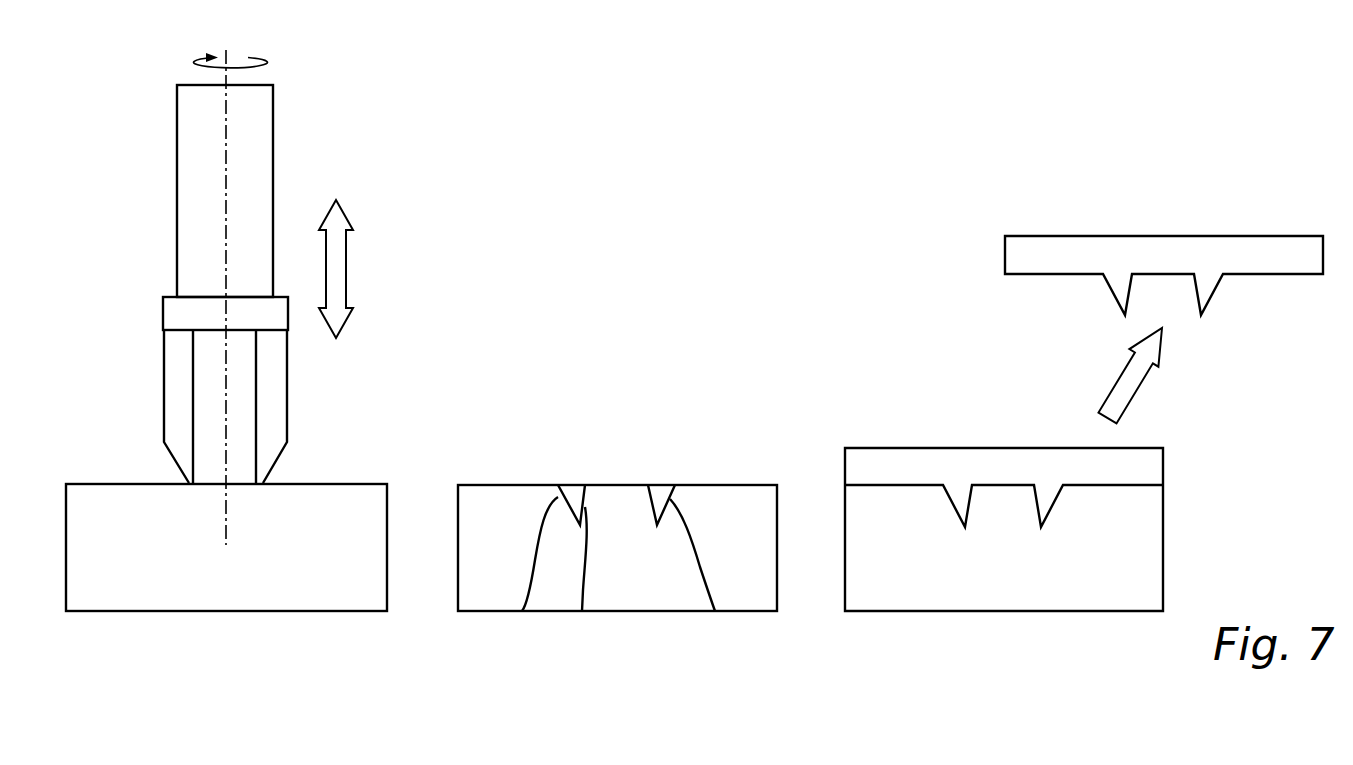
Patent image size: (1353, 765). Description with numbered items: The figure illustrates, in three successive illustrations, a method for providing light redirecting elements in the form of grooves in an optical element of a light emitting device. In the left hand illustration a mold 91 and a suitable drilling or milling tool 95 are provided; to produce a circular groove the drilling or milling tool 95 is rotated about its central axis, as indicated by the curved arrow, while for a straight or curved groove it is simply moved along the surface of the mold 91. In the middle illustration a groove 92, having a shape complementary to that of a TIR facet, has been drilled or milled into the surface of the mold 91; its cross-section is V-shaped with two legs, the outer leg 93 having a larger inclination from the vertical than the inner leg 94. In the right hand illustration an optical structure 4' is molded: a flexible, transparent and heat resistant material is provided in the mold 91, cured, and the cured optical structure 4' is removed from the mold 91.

The drilling or milling tool 95 is at (255, 156).
The mold 91 is at (187, 593).
The groove 92 is at (577, 495).
The outer leg 93 is at (522, 611).
The inner leg 94 is at (650, 503).
The optical structure 4' is at (1084, 343).